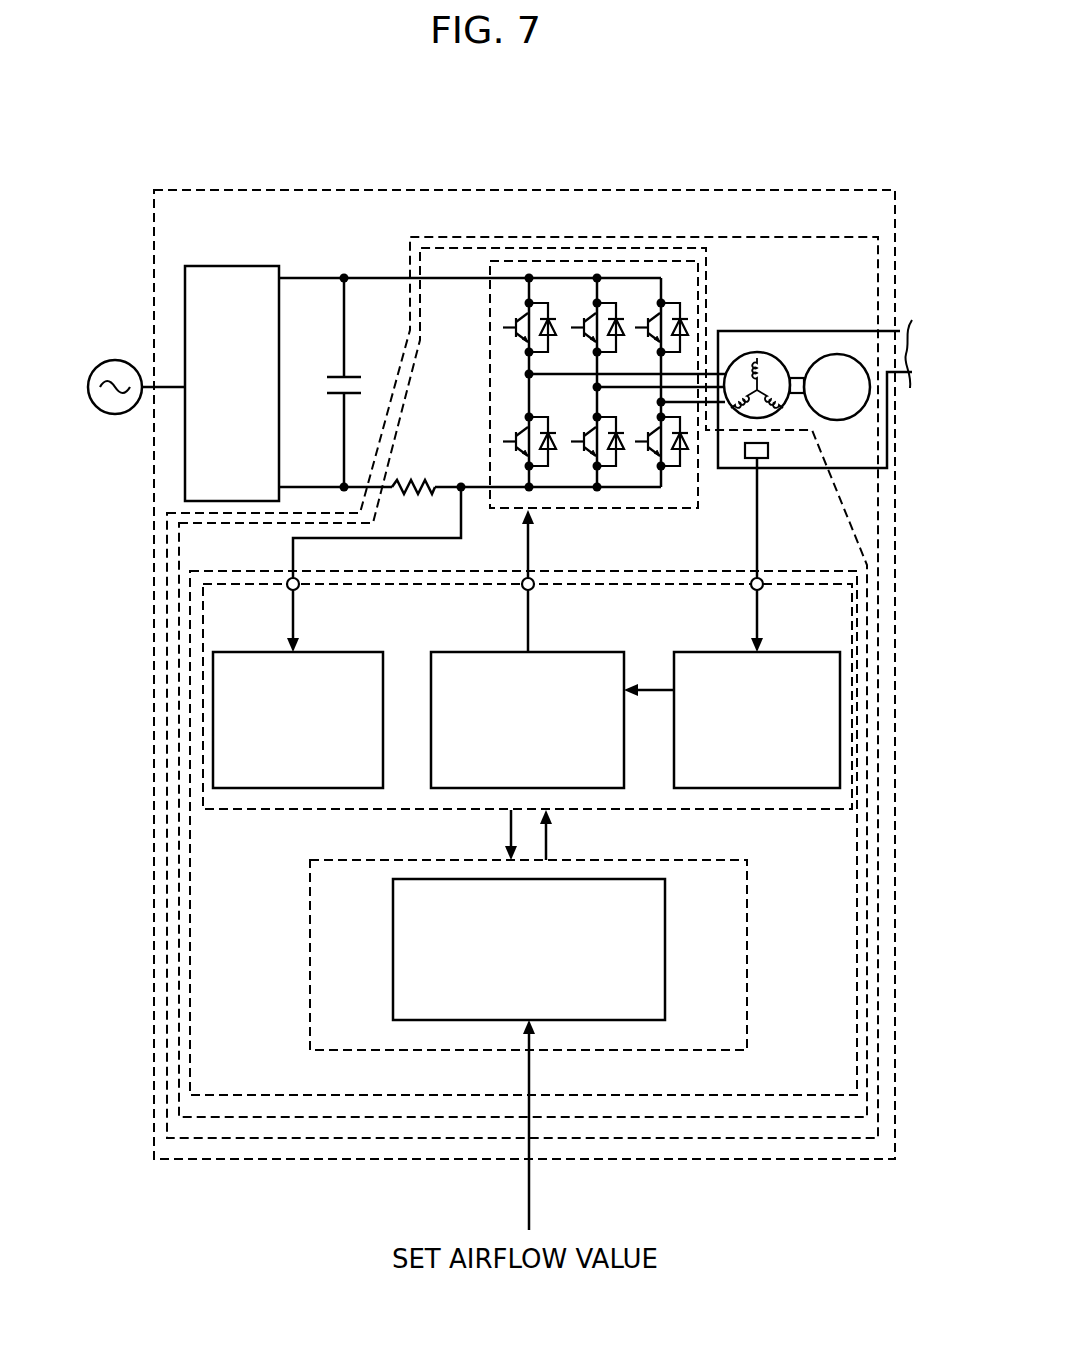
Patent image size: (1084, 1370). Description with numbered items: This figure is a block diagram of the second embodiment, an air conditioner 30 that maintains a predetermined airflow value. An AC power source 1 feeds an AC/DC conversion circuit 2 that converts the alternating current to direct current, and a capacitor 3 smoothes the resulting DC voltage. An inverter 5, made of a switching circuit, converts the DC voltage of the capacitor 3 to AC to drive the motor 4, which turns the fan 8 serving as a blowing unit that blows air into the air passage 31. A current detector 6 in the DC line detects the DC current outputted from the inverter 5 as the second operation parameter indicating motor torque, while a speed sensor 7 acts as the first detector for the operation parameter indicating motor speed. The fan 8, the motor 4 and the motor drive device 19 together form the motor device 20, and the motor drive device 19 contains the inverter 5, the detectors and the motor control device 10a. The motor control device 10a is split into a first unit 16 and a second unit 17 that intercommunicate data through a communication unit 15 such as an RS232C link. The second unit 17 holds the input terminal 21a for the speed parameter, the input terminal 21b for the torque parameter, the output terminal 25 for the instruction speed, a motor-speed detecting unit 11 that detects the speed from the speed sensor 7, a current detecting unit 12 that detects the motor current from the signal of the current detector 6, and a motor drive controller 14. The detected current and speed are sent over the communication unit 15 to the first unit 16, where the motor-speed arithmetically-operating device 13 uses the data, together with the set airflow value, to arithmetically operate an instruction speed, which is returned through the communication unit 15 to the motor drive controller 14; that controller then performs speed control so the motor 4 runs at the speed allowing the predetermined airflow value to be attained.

The AC power source 1 is at (117, 418).
The AC/DC conversion circuit 2 is at (232, 265).
The capacitor 3 is at (353, 376).
The motor 4 is at (772, 350).
The inverter 5 is at (630, 262).
The current detector 6 is at (418, 468).
The speed sensor 7 is at (768, 450).
The fan 8 is at (836, 352).
The motor control device 10a is at (625, 570).
The motor-speed detecting unit 11 is at (806, 650).
The current detecting unit 12 is at (235, 650).
The motor-speed arithmetically-operating device 13 is at (665, 943).
The motor drive controller 14 is at (582, 650).
The communication unit 15 is at (545, 843).
The first unit 16 is at (745, 928).
The second unit 17 is at (698, 582).
The motor drive device 19 is at (687, 1115).
The motor device 20 is at (765, 1140).
The input terminal 21a is at (763, 580).
The input terminal 21b is at (299, 580).
The output terminal 25 is at (533, 583).
The air conditioner 30 is at (855, 1167).
The air passage 31 is at (900, 338).